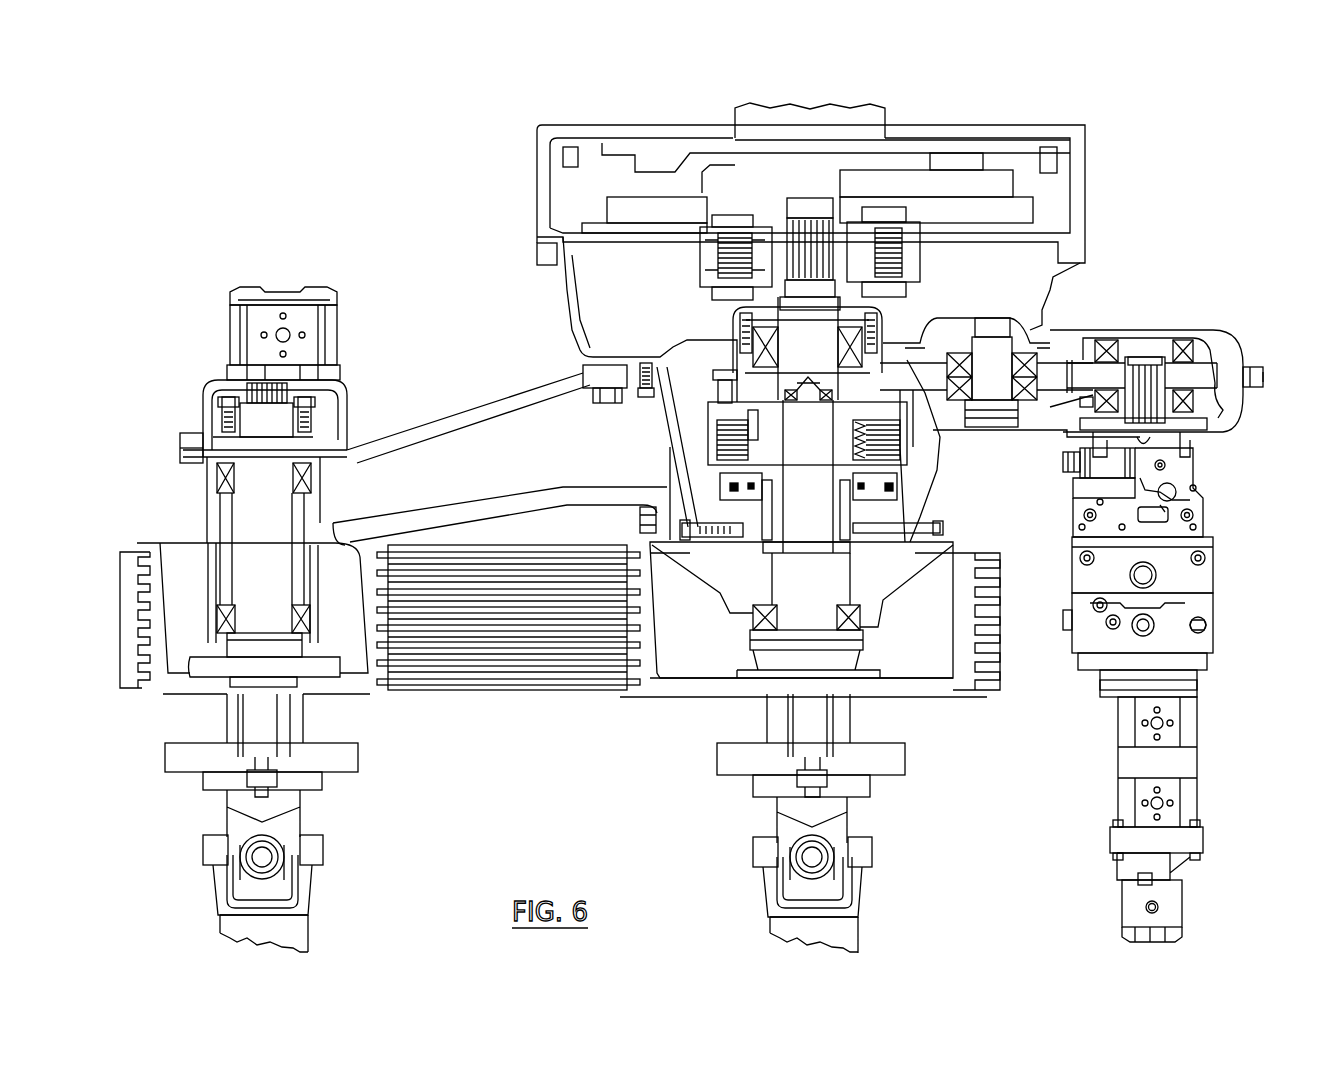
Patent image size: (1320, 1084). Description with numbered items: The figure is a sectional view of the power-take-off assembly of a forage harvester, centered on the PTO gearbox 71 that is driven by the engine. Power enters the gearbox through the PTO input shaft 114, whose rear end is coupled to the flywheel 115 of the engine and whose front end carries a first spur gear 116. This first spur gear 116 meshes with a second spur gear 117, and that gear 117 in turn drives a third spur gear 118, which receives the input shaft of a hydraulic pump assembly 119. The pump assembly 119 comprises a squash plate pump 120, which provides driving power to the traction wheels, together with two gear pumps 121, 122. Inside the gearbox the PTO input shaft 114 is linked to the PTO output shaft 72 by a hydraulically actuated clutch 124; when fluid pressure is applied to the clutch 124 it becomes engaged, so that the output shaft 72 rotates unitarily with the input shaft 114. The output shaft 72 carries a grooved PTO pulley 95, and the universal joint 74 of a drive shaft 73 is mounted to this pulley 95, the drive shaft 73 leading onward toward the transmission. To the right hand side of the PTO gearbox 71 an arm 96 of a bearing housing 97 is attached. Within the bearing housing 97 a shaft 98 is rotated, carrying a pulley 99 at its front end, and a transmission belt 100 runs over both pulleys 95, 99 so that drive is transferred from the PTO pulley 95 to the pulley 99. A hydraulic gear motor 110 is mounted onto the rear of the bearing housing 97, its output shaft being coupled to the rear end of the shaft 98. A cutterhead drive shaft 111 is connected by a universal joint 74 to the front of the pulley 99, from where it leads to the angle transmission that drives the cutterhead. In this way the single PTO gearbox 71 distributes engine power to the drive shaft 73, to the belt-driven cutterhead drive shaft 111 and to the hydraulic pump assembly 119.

The PTO gearbox 71 is at (545, 321).
The output shaft 72 is at (820, 573).
The drive shaft 73 is at (842, 933).
The universal joint 74 is at (313, 850).
The grooved PTO pulley 95 is at (945, 688).
The arm 96 is at (442, 428).
The bearing housing 97 is at (215, 590).
The shaft 98 is at (243, 570).
The pulley 99 is at (165, 685).
The transmission belt 100 is at (540, 668).
The hydraulic gear motor 110 is at (236, 335).
The cutterhead drive shaft 111 is at (292, 931).
The PTO input shaft 114 is at (800, 232).
The flywheel 115 is at (1043, 203).
The first spur gear 116 is at (700, 370).
The second spur gear 117 is at (937, 367).
The third spur gear 118 is at (1202, 373).
The hydraulic pump assembly 119 is at (1088, 724).
The squash plate pump 120 is at (1190, 583).
The gear pump 121 is at (1190, 795).
The gear pump 122 is at (1165, 904).
The hydraulically actuated clutch 124 is at (720, 437).